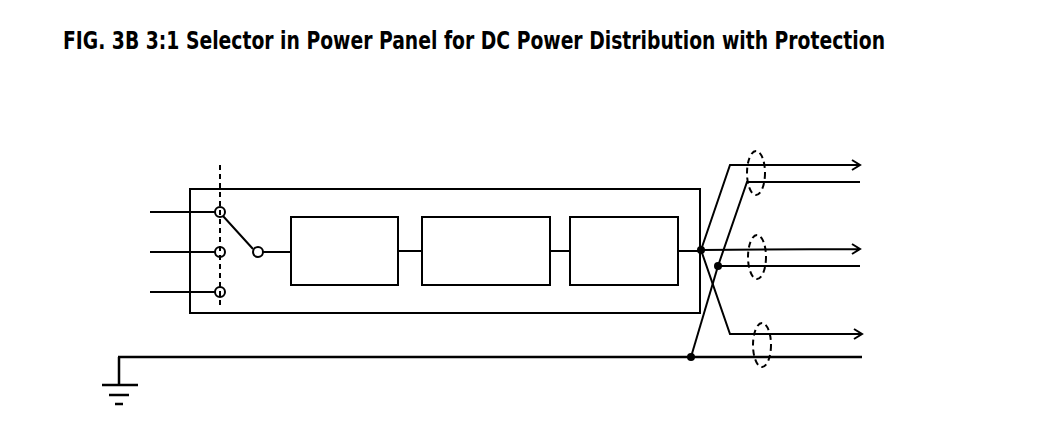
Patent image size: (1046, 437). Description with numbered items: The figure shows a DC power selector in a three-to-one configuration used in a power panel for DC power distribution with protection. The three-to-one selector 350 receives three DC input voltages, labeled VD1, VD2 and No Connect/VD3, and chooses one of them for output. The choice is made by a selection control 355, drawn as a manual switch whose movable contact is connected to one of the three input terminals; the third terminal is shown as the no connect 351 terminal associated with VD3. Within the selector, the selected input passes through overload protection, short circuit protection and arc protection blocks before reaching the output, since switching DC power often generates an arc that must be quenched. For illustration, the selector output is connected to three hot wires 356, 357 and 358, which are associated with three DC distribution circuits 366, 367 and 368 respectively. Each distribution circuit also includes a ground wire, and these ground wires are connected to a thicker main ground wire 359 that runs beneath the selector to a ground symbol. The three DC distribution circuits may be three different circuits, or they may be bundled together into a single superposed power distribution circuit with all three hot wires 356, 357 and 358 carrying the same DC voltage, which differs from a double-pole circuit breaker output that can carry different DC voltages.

The 3:1 selector 350 is at (604, 188).
The selection control / manual switch 355 is at (245, 224).
The no connect VD3 terminal 351 is at (135, 281).
The hot wire 356 is at (790, 193).
The hot wire 357 is at (788, 239).
The hot wire 358 is at (789, 294).
The DC distribution circuit 366 is at (757, 194).
The DC distribution circuit 367 is at (758, 279).
The DC distribution circuit 368 is at (763, 367).
The main ground wire 359 is at (482, 365).